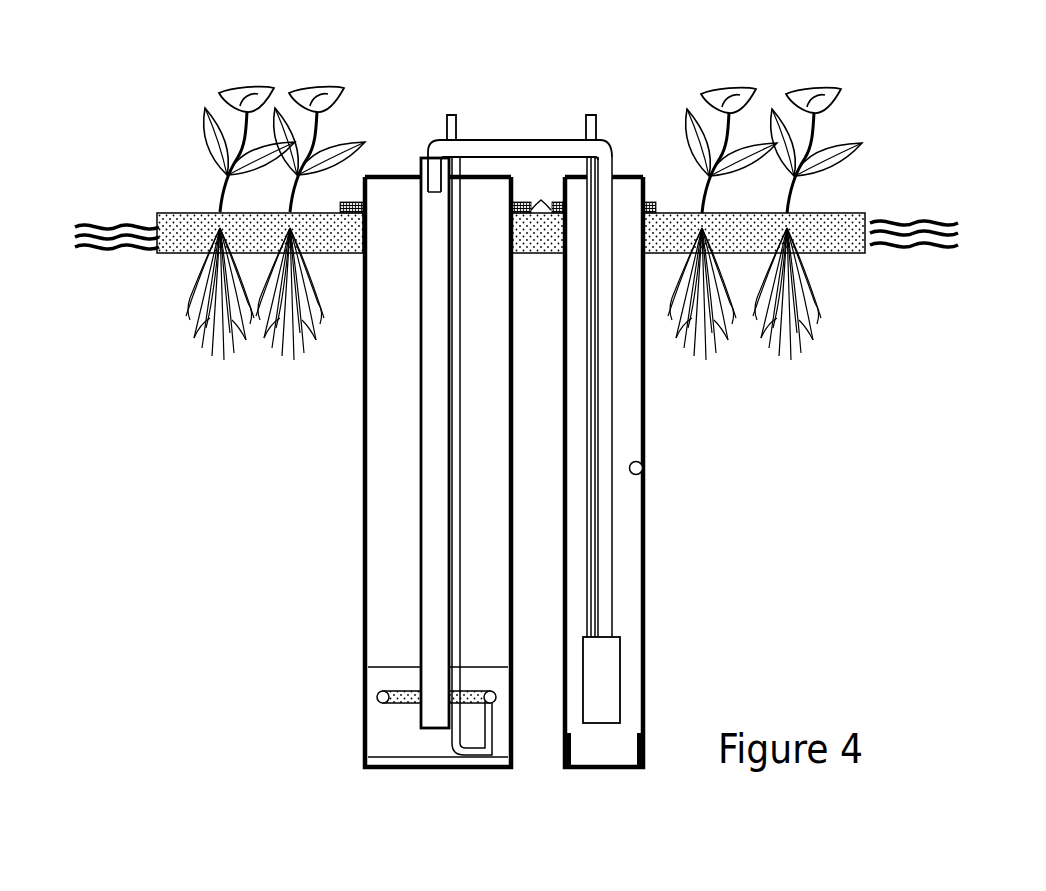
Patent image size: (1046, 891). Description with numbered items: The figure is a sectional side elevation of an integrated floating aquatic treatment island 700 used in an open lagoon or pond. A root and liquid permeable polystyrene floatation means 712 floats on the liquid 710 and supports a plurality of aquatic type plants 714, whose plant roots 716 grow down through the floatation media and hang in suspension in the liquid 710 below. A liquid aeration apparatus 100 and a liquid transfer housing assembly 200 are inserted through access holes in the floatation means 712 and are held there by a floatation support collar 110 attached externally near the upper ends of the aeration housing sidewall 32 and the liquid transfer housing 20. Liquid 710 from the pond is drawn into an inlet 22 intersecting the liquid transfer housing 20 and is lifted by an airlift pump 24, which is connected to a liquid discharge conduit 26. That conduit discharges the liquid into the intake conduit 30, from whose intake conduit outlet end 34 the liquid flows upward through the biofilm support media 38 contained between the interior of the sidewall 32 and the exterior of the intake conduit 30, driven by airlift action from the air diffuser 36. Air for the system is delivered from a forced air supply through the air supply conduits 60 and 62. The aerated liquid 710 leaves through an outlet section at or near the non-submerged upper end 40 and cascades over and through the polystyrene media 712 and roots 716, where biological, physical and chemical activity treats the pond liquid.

The liquid transfer housing 20 is at (625, 567).
The inlet 22 is at (641, 468).
The airlift pump 24 is at (603, 677).
The liquid discharge conduit 26 is at (612, 374).
The intake conduit 30 is at (420, 617).
The aeration housing sidewall 32 is at (365, 472).
The intake conduit outlet end 34 is at (423, 738).
The air diffuser 36 is at (380, 697).
The biofilm support media 38 is at (392, 384).
The non-submerged upper end 40 is at (405, 176).
The air supply conduit 60 is at (590, 114).
The air supply conduit 62 is at (452, 114).
The liquid aeration apparatus 100 is at (354, 429).
The floatation support collar 110 is at (540, 191).
The liquid transfer housing assembly 200 is at (628, 462).
The integrated floating aquatic treatment island 700 is at (160, 186).
The liquid 710 is at (122, 226).
The polystyrene floatation means 712 is at (835, 224).
The aquatic type plants 714 is at (298, 90).
The plant roots 716 is at (293, 323).